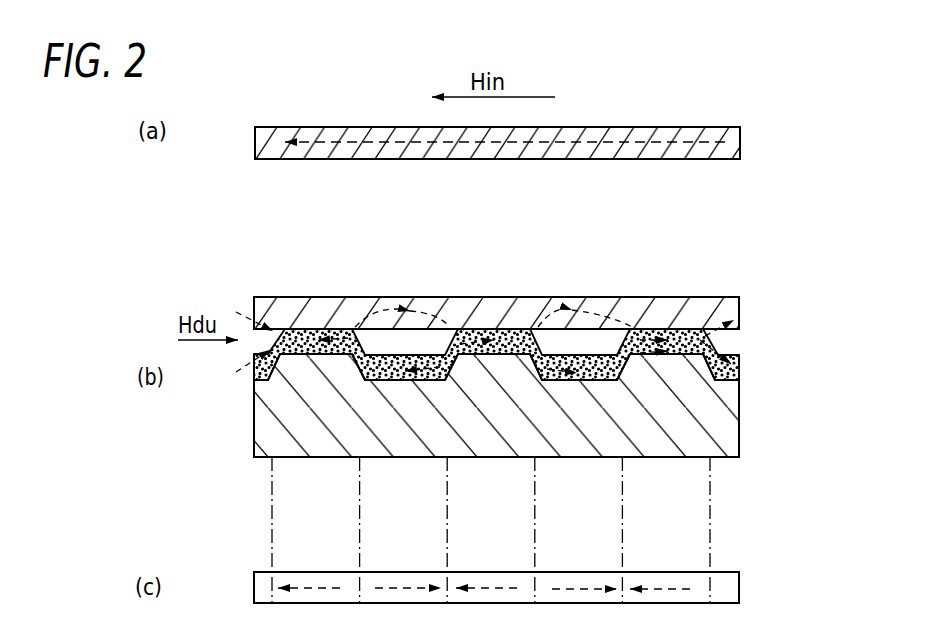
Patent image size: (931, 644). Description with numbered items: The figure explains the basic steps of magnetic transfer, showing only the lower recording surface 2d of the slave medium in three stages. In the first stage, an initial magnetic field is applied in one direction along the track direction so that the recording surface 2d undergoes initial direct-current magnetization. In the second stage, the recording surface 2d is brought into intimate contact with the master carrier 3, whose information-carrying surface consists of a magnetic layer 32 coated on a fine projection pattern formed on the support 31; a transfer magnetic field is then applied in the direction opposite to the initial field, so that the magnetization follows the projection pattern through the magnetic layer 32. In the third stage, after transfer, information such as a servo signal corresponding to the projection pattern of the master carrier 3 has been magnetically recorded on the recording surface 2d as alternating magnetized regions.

The lower recording surface 2d is at (740, 146).
The master carrier 3 is at (730, 397).
The support 31 is at (490, 457).
The magnetic layer 32 is at (493, 333).